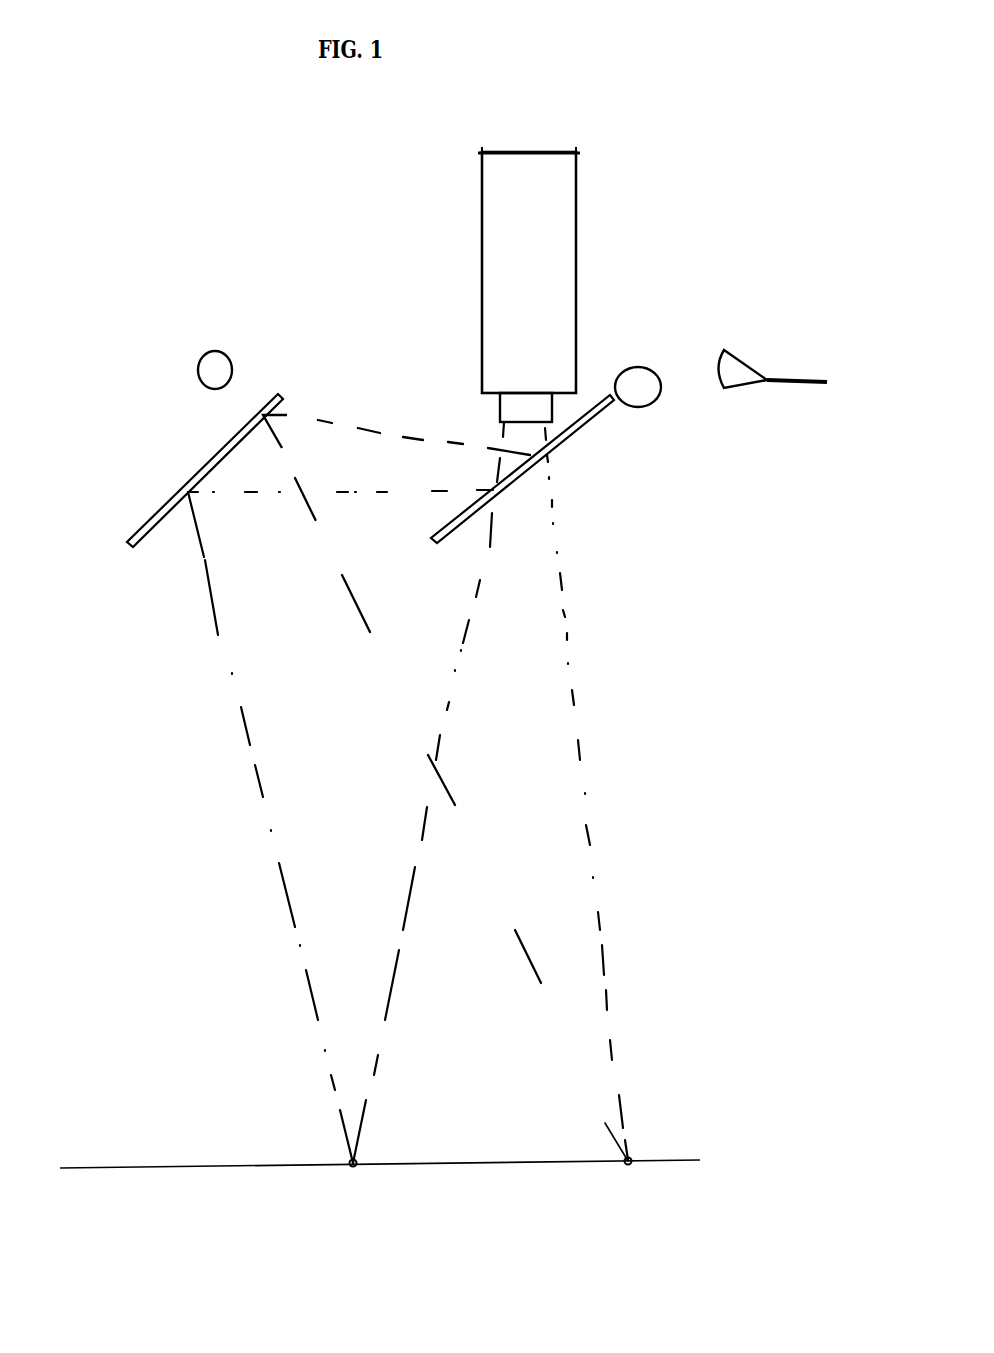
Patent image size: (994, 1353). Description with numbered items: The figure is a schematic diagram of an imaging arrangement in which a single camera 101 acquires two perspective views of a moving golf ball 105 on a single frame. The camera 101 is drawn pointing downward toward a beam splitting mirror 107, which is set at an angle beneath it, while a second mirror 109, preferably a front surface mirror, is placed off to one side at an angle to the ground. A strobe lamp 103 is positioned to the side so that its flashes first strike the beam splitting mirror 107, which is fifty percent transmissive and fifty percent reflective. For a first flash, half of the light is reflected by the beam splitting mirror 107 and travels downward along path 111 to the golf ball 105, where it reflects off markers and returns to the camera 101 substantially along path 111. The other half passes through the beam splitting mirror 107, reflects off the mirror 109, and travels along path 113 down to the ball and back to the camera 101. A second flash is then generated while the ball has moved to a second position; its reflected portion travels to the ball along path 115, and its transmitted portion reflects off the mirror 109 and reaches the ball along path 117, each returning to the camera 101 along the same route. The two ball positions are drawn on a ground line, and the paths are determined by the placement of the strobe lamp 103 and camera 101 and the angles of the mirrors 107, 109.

The camera 101 is at (585, 86).
The strobe lamp 103 is at (783, 326).
The golf ball 105 is at (379, 1205).
The beam splitting mirror 107 is at (632, 338).
The mirror 109 is at (277, 345).
The path 111 is at (641, 960).
The path 113 is at (377, 370).
The path 115 is at (428, 943).
The path 117 is at (262, 541).